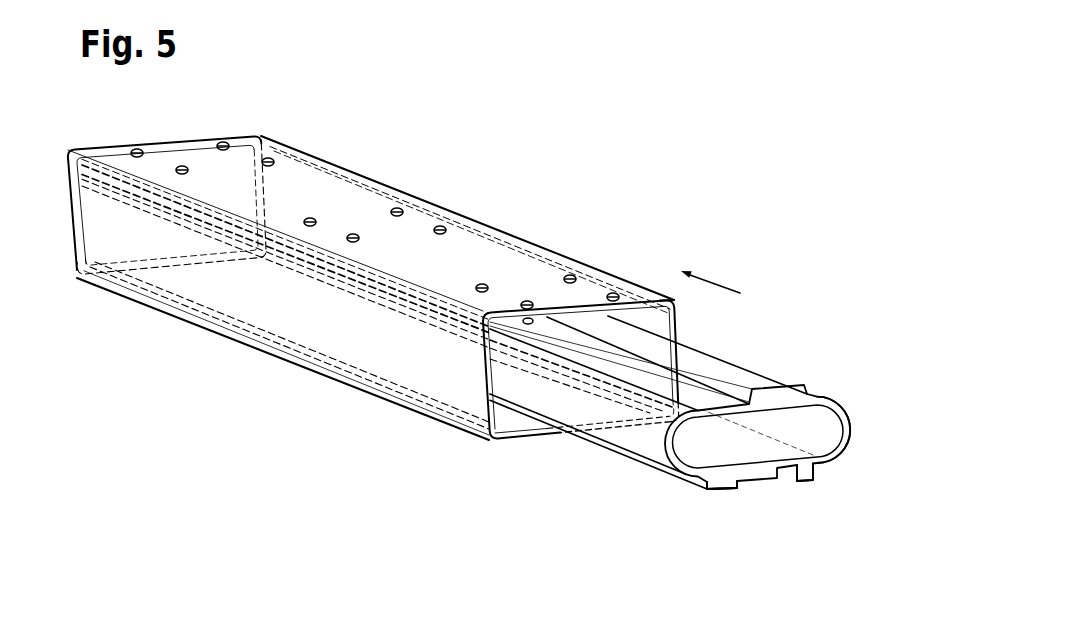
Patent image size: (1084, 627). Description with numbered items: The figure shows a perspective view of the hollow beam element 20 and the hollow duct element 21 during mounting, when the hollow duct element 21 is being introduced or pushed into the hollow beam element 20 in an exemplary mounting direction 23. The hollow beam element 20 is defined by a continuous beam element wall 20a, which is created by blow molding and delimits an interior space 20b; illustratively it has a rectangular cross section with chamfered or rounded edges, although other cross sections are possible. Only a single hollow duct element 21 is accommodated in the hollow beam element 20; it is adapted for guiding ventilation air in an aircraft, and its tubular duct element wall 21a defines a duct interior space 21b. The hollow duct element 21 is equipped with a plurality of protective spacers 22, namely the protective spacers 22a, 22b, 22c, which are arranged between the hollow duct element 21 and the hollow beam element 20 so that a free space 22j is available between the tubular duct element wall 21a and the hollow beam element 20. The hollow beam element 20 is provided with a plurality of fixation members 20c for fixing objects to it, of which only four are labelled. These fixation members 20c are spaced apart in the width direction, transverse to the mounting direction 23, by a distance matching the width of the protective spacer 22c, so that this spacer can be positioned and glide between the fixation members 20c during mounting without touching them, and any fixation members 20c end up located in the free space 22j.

The hollow beam element 20 is at (357, 170).
The beam element wall 20a is at (490, 385).
The interior space 20b is at (516, 425).
The fixation members 20c is at (180, 167).
The hollow duct element 21 is at (860, 456).
The tubular duct element wall 21a is at (840, 418).
The duct interior space 21b is at (700, 447).
The plurality of protective spacers 22 is at (706, 500).
The protective spacer 22a is at (803, 481).
The protective spacer 22b is at (718, 489).
The protective spacer 22c is at (750, 398).
The free space 22j is at (663, 324).
The mounting direction 23 is at (716, 278).